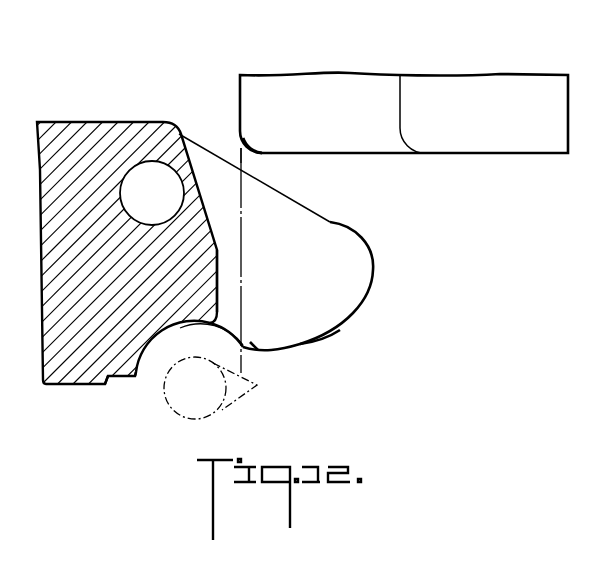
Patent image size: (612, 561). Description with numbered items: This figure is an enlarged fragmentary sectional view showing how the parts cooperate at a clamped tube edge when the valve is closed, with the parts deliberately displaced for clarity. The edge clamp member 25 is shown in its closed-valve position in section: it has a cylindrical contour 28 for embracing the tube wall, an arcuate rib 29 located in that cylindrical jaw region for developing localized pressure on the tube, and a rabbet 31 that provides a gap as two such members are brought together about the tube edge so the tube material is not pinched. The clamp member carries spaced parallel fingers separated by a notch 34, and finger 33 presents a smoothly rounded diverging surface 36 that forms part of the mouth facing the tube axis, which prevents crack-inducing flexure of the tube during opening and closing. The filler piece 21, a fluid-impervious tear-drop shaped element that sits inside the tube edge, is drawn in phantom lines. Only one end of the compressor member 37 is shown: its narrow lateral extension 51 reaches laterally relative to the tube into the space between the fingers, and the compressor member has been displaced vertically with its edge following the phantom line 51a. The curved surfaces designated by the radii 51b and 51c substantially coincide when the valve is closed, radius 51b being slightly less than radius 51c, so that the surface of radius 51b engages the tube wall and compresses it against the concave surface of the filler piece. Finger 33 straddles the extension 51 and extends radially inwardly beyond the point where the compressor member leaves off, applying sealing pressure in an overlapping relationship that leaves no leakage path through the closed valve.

The filler piece 21 is at (197, 387).
The edge clamp member 25 is at (103, 122).
The cylindrical contour 28 is at (179, 328).
The arcuate rib 29 is at (145, 376).
The rabbet 31 is at (113, 384).
The finger 33 is at (334, 222).
The notch 34 is at (219, 277).
The surface 36 is at (326, 333).
The compressor member 37 is at (506, 142).
The lateral extension 51 is at (280, 75).
The phantom line 51a is at (242, 163).
The radius 51b is at (268, 124).
The radius 51c is at (255, 346).